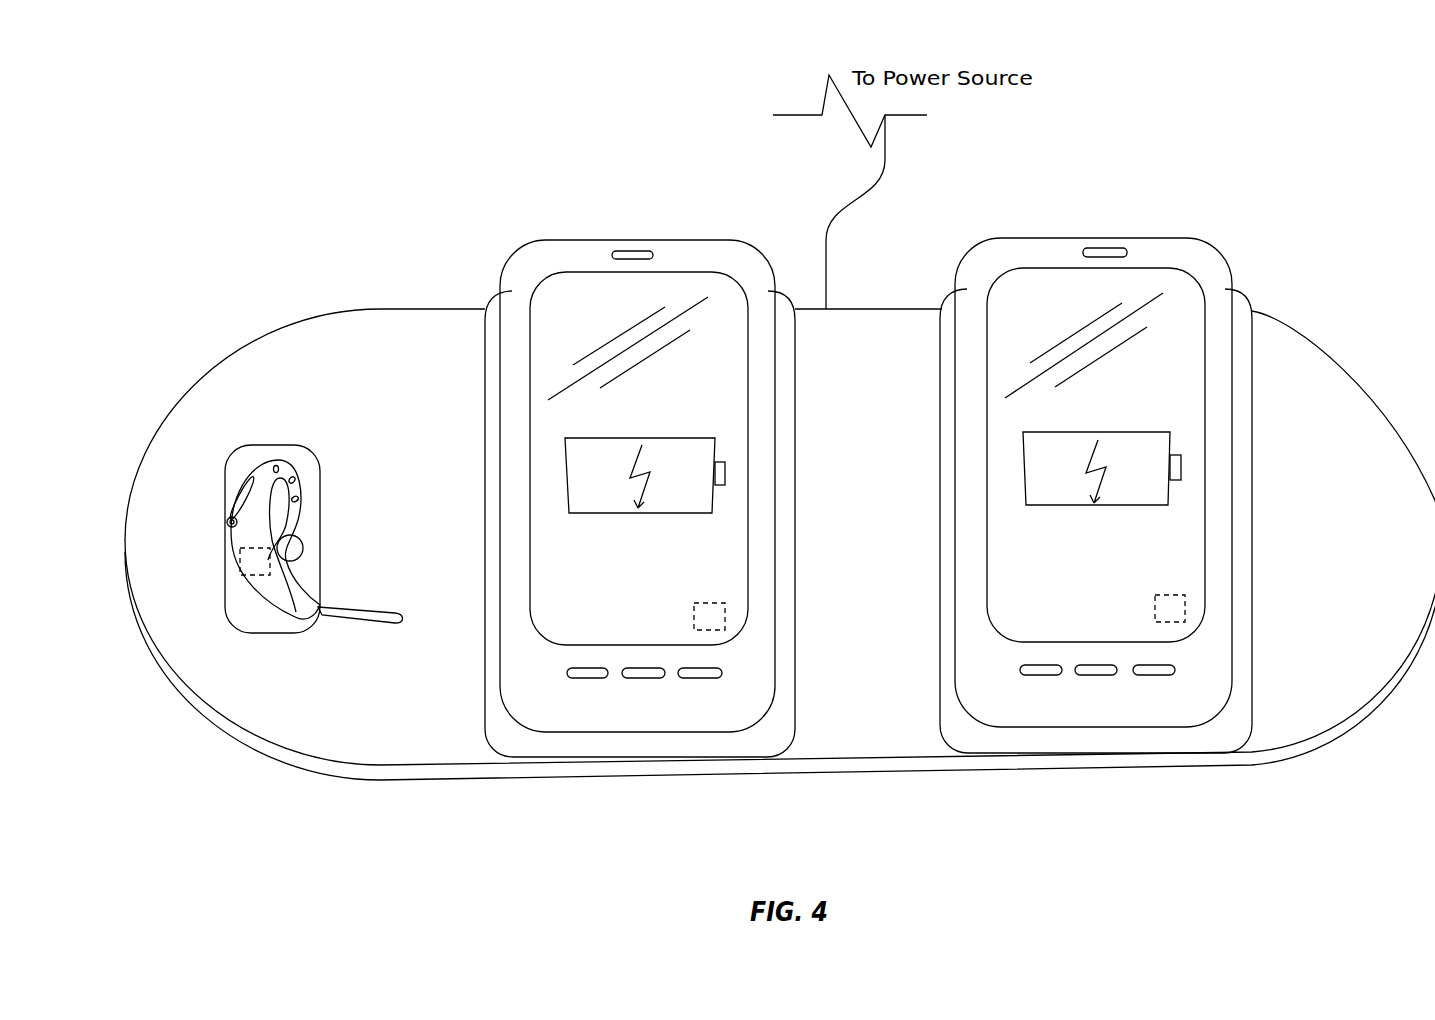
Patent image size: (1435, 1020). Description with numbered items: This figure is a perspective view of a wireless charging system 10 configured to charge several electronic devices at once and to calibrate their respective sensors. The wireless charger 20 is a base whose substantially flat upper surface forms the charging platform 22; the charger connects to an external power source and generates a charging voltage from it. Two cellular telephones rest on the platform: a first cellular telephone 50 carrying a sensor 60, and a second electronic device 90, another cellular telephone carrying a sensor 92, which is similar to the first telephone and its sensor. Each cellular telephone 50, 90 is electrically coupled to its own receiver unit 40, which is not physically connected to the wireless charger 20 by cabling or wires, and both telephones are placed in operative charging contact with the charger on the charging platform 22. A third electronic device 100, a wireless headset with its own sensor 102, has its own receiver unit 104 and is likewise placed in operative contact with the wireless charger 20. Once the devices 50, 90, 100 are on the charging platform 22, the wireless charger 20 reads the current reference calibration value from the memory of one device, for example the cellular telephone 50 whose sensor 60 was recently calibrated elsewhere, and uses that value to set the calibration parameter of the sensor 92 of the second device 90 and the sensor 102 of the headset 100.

The wireless charging system 10 is at (1334, 107).
The wireless charger 20 is at (270, 329).
The charging platform 22 is at (1334, 556).
The receiver unit 40 is at (612, 752).
The cellular telephone 50 is at (558, 256).
The sensor 60 is at (726, 626).
The second electronic device 90 is at (1160, 252).
The sensor 92 is at (1186, 620).
The third electronic device 100 is at (236, 474).
The sensor 102 is at (262, 577).
The receiver unit 104 is at (272, 634).